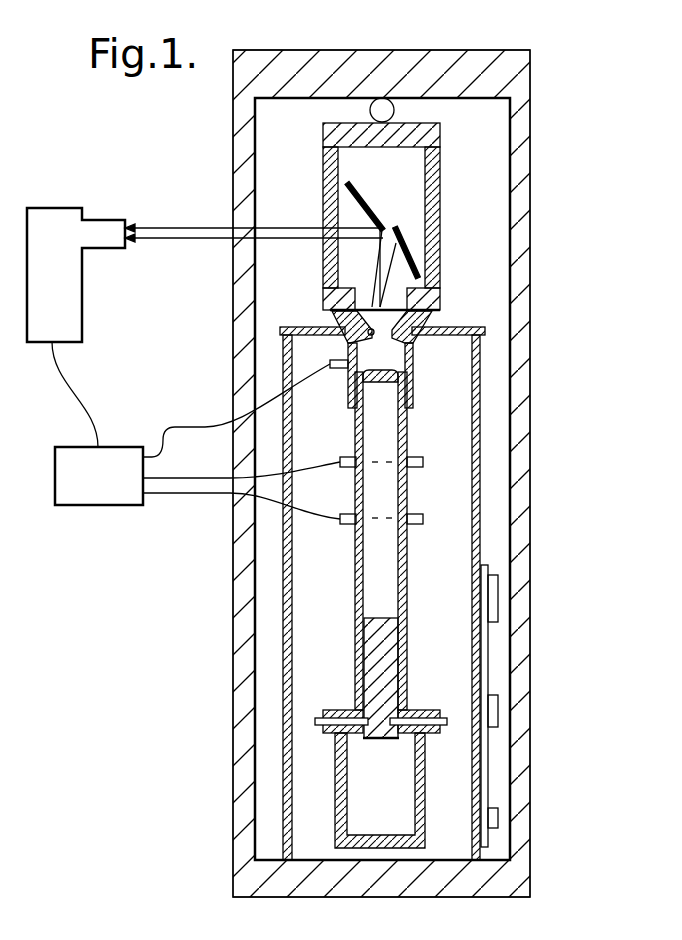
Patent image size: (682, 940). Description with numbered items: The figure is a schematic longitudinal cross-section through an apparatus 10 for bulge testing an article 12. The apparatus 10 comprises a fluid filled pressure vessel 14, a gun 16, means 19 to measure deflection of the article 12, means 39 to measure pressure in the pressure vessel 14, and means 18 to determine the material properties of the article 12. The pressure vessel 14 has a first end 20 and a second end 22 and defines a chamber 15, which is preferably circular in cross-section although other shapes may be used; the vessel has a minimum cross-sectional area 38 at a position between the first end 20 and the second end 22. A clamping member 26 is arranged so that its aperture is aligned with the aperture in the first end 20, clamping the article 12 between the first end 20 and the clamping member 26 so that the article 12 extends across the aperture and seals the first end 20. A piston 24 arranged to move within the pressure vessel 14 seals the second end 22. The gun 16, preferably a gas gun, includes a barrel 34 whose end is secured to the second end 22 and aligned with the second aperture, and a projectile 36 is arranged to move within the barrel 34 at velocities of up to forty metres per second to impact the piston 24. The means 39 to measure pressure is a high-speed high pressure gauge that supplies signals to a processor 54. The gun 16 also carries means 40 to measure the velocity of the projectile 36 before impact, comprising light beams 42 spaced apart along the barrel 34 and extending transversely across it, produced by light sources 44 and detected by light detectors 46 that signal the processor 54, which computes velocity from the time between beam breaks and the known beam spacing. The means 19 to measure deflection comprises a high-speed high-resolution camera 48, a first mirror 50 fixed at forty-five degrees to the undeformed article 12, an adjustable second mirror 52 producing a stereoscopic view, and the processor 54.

The apparatus 10 is at (568, 72).
The article 12 is at (372, 307).
The pressure vessel 14 is at (388, 357).
The chamber 15 is at (428, 366).
The gun 16 is at (417, 638).
The means to determine the material properties of the article 18 is at (175, 188).
The means to measure deflection of the article 19 is at (450, 172).
The first end 20 is at (375, 332).
The second end 22 is at (410, 410).
The piston 24 is at (383, 387).
The clamping member 26 is at (437, 313).
The barrel 34 is at (410, 547).
The projectile 36 is at (370, 693).
The minimum cross-sectional area 38 is at (353, 325).
The means to measure pressure 39 is at (340, 370).
The means to measure the velocity of the projectile 40 is at (442, 452).
The light beams 42 is at (388, 465).
The light sources 44 is at (423, 462).
The light detectors 46 is at (350, 468).
The high-speed high-resolution camera 48 is at (52, 225).
The first mirror 50 is at (353, 197).
The second mirror 52 is at (405, 252).
The processor 54 is at (80, 495).